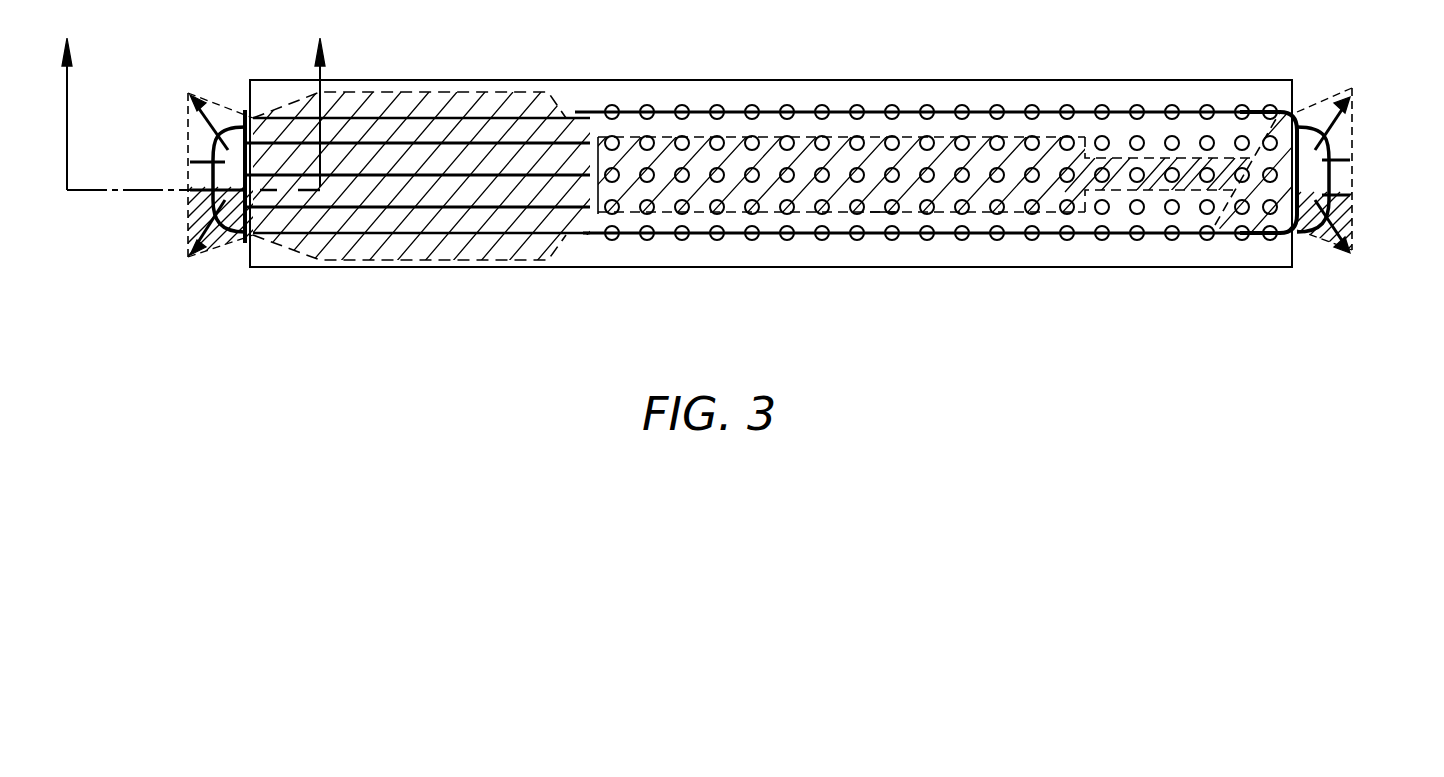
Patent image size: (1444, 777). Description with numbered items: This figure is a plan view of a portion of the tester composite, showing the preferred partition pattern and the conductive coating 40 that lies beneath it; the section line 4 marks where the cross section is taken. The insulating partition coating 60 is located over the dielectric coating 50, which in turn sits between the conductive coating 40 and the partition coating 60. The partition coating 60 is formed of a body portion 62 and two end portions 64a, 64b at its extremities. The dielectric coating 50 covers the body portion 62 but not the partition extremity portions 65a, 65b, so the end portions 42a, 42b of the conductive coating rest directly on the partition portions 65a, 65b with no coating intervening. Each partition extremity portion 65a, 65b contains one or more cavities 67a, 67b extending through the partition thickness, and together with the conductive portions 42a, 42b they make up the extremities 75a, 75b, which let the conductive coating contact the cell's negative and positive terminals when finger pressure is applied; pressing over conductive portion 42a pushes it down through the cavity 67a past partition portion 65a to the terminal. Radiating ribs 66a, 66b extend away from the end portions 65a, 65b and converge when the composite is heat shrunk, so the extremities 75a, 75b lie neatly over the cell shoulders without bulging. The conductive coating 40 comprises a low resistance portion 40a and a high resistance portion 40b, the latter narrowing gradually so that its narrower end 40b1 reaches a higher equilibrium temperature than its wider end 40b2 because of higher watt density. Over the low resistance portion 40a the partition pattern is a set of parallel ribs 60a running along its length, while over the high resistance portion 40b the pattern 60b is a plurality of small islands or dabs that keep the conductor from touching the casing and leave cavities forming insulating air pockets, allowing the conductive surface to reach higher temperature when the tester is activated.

The section line 4- 4 is at (193, 102).
The conductive coating 40 is at (808, 140).
The low resistance portion 40a is at (413, 92).
The high resistance portion 40b is at (662, 140).
The narrower end 40b1 is at (1087, 148).
The wider end 40b2 is at (600, 217).
The conductive portion 42a is at (245, 118).
The conductive portion 42b is at (1300, 130).
The dielectric coating 50 is at (1023, 268).
The partition coating 60 is at (577, 112).
The parallel ribs 60a is at (427, 237).
The islands 60b is at (882, 212).
The body portion 62 is at (910, 110).
The end portion 64a is at (187, 162).
The end portion 64b is at (1347, 150).
The partition extremity portion 65a is at (217, 110).
The partition extremity portion 65b is at (1320, 130).
The radiating ribs 66a is at (203, 250).
The radiating ribs 66b is at (1347, 230).
The cavity 67a is at (233, 227).
The cavity 67b is at (1323, 237).
The extremity 75a is at (197, 207).
The extremity 75b is at (1332, 193).